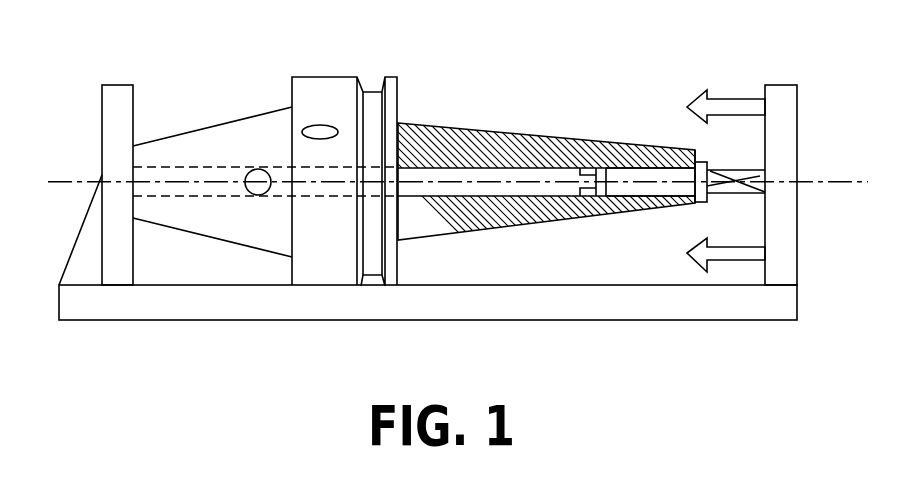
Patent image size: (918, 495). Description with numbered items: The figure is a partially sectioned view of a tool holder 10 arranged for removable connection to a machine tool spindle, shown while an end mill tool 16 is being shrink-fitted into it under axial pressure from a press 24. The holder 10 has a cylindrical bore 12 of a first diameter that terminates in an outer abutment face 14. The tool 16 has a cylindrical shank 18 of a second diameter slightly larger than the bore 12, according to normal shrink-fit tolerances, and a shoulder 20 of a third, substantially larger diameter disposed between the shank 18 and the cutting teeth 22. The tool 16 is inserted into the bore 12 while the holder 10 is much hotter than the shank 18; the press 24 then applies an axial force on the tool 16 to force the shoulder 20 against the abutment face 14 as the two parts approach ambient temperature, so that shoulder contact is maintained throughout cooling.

The tool holder 10 is at (330, 86).
The cylindrical bore 12 is at (582, 170).
The outer abutment face 14 is at (698, 150).
The end mill tool 16 is at (738, 197).
The cylindrical shank 18 is at (620, 148).
The shoulder 20 is at (700, 203).
The cutting teeth 22 is at (752, 178).
The press 24 is at (562, 308).